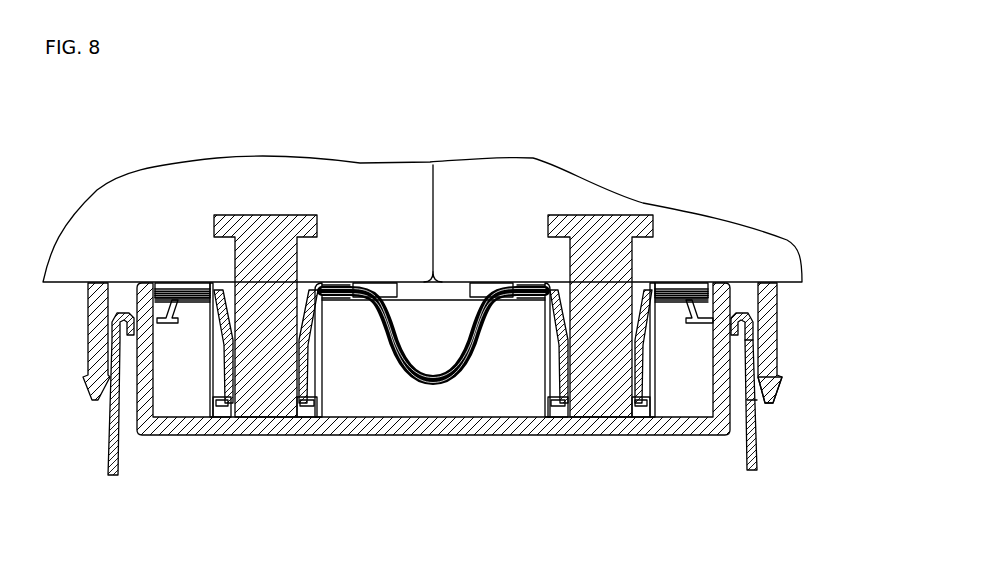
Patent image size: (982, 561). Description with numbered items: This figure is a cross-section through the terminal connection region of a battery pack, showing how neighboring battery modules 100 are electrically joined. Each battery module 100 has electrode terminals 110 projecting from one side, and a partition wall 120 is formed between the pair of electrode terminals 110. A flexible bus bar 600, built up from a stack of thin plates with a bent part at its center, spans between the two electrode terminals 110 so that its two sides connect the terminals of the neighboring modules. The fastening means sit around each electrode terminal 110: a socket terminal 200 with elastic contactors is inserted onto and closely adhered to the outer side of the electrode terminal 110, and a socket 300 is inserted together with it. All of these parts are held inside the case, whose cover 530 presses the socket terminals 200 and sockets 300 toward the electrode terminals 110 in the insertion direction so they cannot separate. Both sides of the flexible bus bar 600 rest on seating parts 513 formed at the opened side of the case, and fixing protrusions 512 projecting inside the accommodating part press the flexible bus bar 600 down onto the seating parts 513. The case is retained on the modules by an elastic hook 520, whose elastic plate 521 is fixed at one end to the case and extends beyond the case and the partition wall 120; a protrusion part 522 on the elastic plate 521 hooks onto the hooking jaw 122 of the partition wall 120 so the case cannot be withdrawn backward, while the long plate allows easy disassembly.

The battery module 100 is at (469, 178).
The electrode terminal 110 is at (263, 223).
The partition wall 120 is at (777, 302).
The hooking jaw 122 is at (775, 385).
The socket terminal 200 is at (648, 292).
The socket 300 is at (209, 370).
The fixing protrusion 512 is at (133, 352).
The seating part 513 is at (165, 282).
The elastic hook 520 is at (755, 427).
The elastic plate 521 is at (747, 468).
The protrusion part 522 is at (757, 370).
The cover 530 is at (508, 425).
The flexible bus bar 600 is at (433, 386).